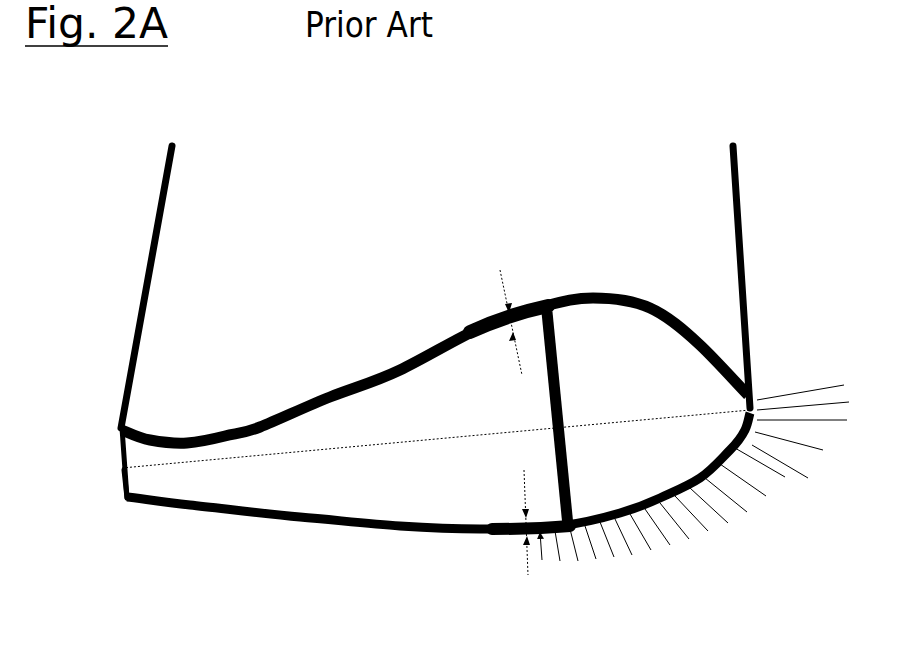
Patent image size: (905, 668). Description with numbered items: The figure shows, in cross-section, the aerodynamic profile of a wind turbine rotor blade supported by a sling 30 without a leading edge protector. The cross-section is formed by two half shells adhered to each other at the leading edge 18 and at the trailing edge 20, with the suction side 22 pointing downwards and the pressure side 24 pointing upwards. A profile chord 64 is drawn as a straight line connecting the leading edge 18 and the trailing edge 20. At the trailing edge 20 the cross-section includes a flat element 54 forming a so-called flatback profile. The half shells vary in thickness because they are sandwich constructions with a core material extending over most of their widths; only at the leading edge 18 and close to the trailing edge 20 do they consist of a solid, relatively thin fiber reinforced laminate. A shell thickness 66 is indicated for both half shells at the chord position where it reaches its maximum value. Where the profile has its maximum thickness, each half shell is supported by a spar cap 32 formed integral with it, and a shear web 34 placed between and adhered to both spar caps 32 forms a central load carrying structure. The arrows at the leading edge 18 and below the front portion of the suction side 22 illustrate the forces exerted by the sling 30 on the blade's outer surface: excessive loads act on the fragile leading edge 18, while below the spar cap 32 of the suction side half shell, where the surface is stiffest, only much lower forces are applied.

The leading edge 18 is at (757, 405).
The trailing edge 20 is at (120, 466).
The suction side 22 is at (377, 532).
The pressure side 24 is at (368, 378).
The sling 30 is at (153, 273).
The spar cap 32 is at (498, 335).
The shear web 34 is at (567, 382).
The flat element 54 is at (123, 491).
The profile chord 64 is at (338, 447).
The shell thickness 66 is at (517, 422).